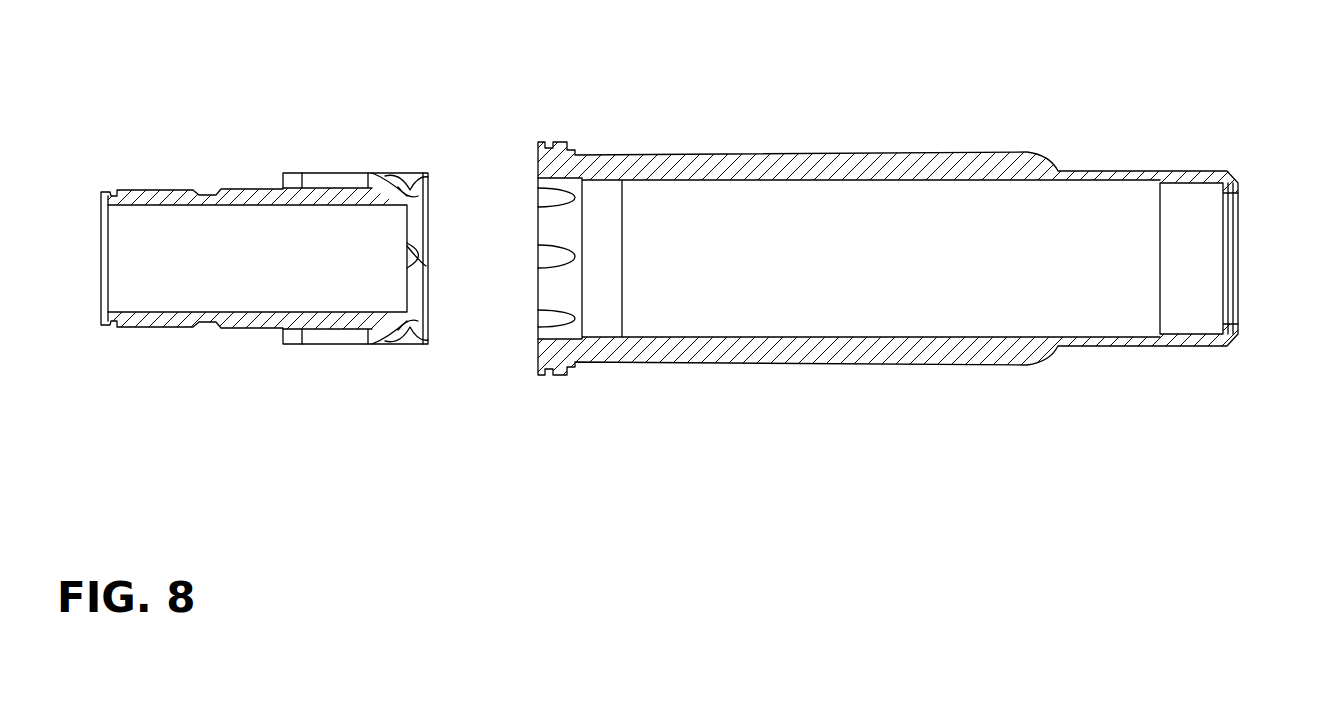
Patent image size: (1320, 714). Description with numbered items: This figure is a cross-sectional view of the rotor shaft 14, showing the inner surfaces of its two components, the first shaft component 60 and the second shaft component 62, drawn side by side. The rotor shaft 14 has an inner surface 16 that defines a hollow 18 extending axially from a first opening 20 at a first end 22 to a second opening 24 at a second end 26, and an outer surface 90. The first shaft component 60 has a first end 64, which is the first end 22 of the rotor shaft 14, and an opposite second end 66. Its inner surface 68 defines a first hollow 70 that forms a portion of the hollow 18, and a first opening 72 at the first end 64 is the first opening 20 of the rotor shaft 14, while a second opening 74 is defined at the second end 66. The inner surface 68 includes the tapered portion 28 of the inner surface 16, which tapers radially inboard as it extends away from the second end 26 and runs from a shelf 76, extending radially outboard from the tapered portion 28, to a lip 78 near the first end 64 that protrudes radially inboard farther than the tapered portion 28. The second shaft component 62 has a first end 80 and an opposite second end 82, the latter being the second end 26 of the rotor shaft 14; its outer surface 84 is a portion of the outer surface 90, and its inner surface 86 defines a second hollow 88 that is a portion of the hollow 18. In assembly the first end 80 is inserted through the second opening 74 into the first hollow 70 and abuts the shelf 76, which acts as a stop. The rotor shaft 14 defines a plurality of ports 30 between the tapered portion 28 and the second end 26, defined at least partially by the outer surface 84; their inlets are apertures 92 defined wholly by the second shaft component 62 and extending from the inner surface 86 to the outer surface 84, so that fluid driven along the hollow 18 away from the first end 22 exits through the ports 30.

The rotor shaft 14 is at (827, 142).
The inner surface 16 is at (773, 182).
The hollow 18 is at (840, 212).
The first opening 20 is at (1246, 249).
The first end 22 is at (1240, 183).
The second opening 24 is at (92, 247).
The second end 26 is at (100, 196).
The tapered portion 28 is at (720, 178).
The plurality of ports 30 is at (398, 183).
The first shaft component 60 is at (905, 145).
The second shaft component 62 is at (246, 180).
The first end 64 is at (1238, 334).
The second end 66 is at (537, 366).
The inner surface 68 is at (944, 185).
The first hollow 70 is at (997, 207).
The first opening 72 is at (1246, 280).
The second opening 74 is at (534, 242).
The shelf 76 is at (576, 346).
The lip 78 is at (1228, 198).
The first end 80 is at (433, 218).
The second end 82 is at (100, 321).
The outer surface 84 is at (283, 170).
The inner surface 86 is at (205, 208).
The second hollow 88 is at (166, 291).
The outer surface 90 is at (847, 363).
The apertures 92 is at (393, 334).